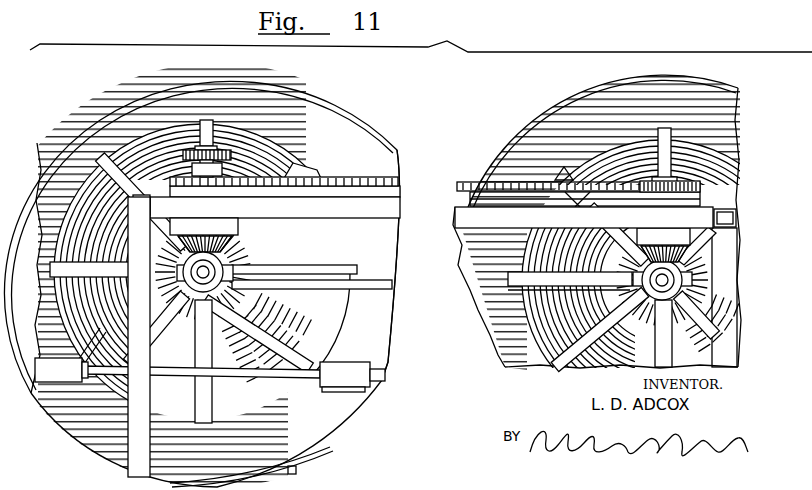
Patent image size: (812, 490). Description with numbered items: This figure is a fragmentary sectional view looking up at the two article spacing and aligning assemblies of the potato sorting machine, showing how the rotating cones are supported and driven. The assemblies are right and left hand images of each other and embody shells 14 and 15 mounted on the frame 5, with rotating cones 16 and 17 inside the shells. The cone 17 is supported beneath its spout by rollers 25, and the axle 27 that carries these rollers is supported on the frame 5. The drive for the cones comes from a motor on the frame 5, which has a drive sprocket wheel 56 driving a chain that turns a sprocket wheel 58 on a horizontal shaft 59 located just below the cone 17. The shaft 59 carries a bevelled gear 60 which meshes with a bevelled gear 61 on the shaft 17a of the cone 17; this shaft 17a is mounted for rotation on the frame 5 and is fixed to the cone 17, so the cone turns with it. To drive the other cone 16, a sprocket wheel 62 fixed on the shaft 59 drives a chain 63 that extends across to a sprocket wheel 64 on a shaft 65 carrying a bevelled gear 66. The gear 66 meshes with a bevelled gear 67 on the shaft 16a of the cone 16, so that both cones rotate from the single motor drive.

The frame 5 is at (147, 354).
The shell 14 is at (550, 109).
The shell 15 is at (80, 112).
The cone 16 is at (533, 134).
The shaft of the cone 16a is at (655, 284).
The cone 17 is at (312, 105).
The shaft of the cone 17a is at (214, 279).
The rollers 25 is at (43, 362).
The axle 27 is at (240, 378).
The drive sprocket wheel 56 is at (243, 158).
The sprocket wheel 58 is at (240, 167).
The horizontal shaft 59 is at (212, 156).
The bevelled gear 60 is at (237, 243).
The bevelled gear 61 is at (218, 306).
The sprocket wheel 62 is at (266, 206).
The chain 63 is at (462, 183).
The sprocket wheel 64 is at (698, 187).
The shaft 65 is at (664, 180).
The bevelled gear 66 is at (695, 252).
The bevelled gear 67 is at (703, 318).